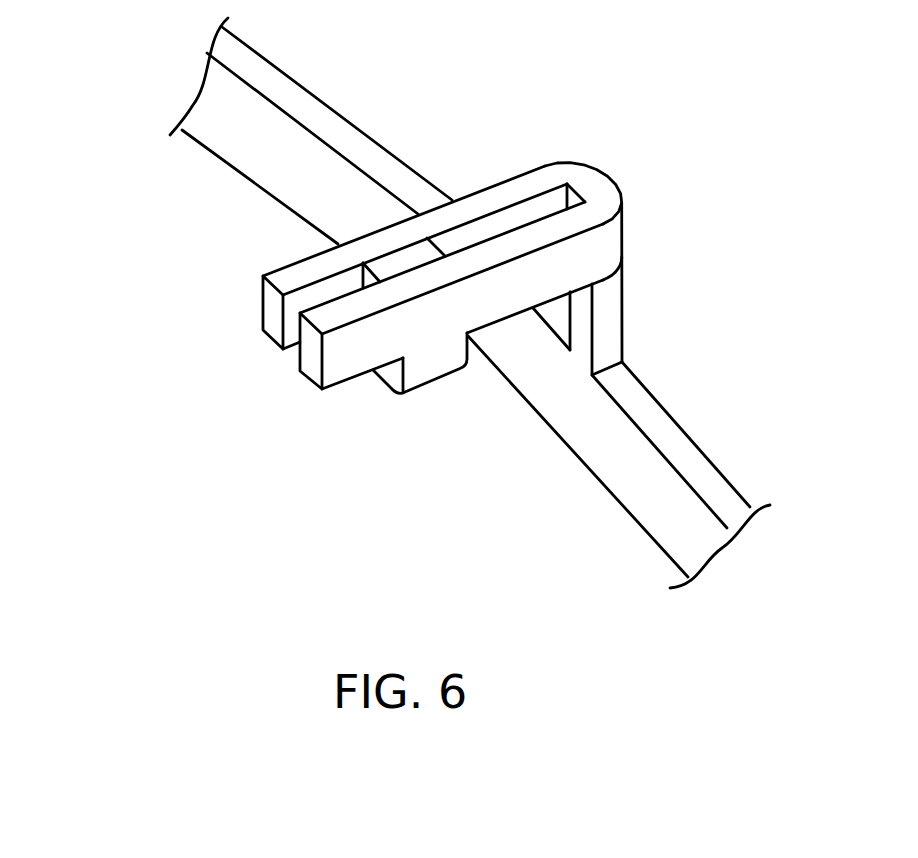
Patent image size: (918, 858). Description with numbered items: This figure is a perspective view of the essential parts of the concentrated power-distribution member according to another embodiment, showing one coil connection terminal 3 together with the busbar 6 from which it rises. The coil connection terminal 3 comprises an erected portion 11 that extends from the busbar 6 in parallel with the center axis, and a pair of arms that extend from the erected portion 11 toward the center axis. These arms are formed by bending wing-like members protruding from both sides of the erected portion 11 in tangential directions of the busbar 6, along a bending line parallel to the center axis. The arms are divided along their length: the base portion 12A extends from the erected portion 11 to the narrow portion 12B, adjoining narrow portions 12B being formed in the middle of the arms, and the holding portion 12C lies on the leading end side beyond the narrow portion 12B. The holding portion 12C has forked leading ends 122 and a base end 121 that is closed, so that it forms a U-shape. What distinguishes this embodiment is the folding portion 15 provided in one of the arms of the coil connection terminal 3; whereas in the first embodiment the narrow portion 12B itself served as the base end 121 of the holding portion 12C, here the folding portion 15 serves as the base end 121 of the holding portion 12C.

The coil connection terminal 3 is at (547, 103).
The busbar 6 is at (363, 140).
The erected portion 11 is at (610, 310).
The base portion 12A is at (512, 190).
The narrow portion 12B is at (410, 257).
The holding portion 12C is at (108, 262).
The base end 121 is at (367, 283).
The forked leading ends 122 is at (313, 368).
The folding portion 15 is at (393, 381).